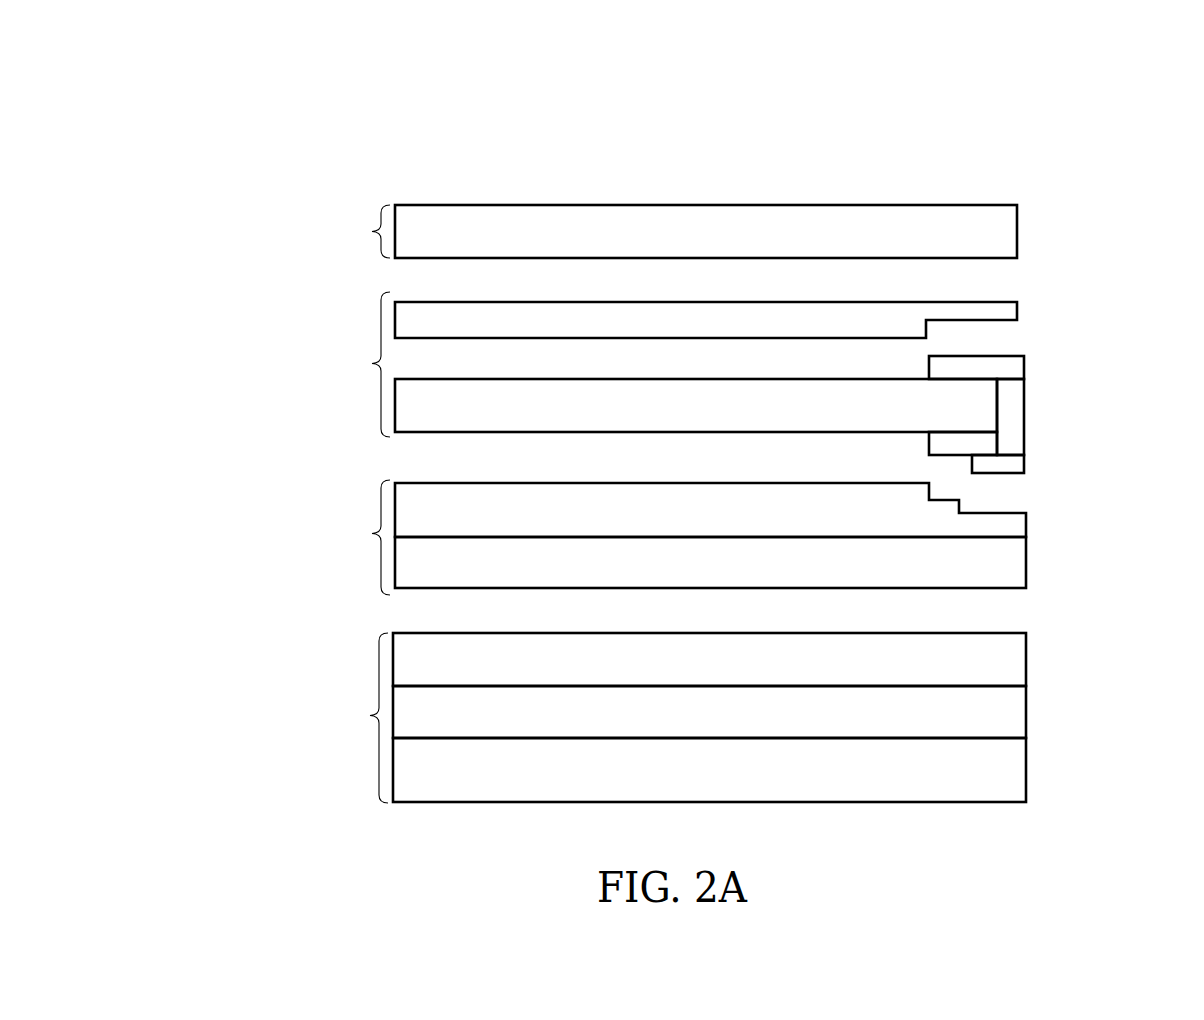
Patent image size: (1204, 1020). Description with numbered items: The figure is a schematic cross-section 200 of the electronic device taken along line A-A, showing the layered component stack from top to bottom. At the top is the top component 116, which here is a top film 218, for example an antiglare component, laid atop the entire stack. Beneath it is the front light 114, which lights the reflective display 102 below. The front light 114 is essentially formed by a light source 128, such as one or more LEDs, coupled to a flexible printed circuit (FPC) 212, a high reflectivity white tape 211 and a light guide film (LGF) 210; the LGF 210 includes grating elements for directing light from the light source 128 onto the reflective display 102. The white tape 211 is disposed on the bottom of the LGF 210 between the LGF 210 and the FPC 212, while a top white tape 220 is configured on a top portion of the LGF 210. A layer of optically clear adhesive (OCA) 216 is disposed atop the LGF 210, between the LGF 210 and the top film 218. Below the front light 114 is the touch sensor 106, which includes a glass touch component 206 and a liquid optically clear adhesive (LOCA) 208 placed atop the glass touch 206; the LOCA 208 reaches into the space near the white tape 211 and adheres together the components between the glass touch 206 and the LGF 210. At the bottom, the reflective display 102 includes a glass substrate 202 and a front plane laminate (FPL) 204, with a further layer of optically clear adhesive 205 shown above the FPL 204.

The schematic cross-section 200 is at (740, 127).
The top component 116 is at (583, 231).
The top film 218 is at (706, 231).
The front light 114 is at (674, 469).
The optically clear adhesive (OCA) 216 is at (706, 320).
The top white tape 220 is at (980, 370).
The light guide film (LGF) 210 is at (696, 405).
The light source 128 is at (1010, 432).
The high reflectivity white tape 211 is at (963, 443).
The flexible printed circuit (FPC) 212 is at (1005, 466).
The touch sensor 106 is at (591, 537).
The liquid optically clear adhesive (LOCA) 208 is at (710, 510).
The glass touch component 206 is at (710, 562).
The reflective display 102 is at (602, 718).
The optically clear adhesive (OCA) 205 is at (709, 659).
The front plane laminate (FPL) 204 is at (709, 712).
The glass substrate 202 is at (709, 770).